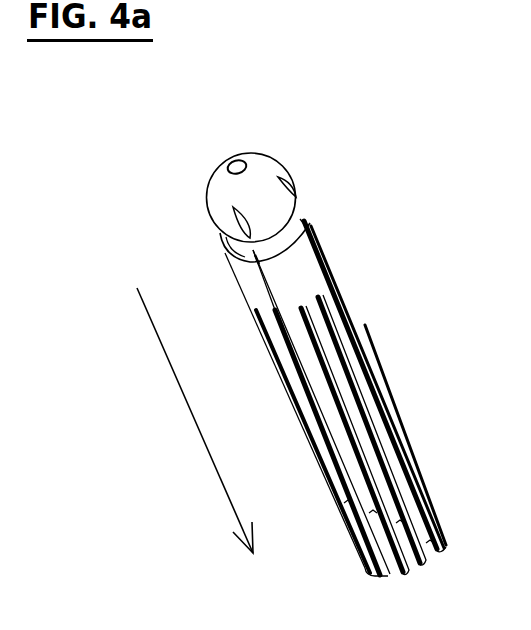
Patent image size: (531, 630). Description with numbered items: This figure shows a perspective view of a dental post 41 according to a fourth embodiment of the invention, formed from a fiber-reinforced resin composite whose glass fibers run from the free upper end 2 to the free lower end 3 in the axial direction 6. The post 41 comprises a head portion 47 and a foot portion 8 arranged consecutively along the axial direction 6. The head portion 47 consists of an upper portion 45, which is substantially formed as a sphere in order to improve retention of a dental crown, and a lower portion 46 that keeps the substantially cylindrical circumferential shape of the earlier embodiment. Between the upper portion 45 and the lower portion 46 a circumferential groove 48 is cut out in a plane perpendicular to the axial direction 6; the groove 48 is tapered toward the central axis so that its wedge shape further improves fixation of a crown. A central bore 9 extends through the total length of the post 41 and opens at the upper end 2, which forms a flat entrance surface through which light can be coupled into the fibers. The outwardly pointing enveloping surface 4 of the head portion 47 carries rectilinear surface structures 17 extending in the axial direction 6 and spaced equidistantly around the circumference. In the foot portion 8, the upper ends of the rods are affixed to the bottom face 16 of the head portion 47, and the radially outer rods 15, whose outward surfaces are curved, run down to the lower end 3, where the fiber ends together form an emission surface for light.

The dental post 41 is at (132, 137).
The upper end 2 is at (253, 157).
The central bore 9 is at (226, 156).
The upper portion 45 is at (215, 204).
The circumferential groove 48 is at (223, 237).
The lower portion 46 is at (250, 293).
The head portion 47 is at (300, 278).
The enveloping surface 4 is at (360, 375).
The bottom face 16 is at (318, 305).
The surface structures 17 is at (296, 232).
The foot portion 8 is at (397, 427).
The radially outer rods 15 is at (430, 540).
The lower end 3 is at (420, 565).
The axial direction 6 is at (207, 448).